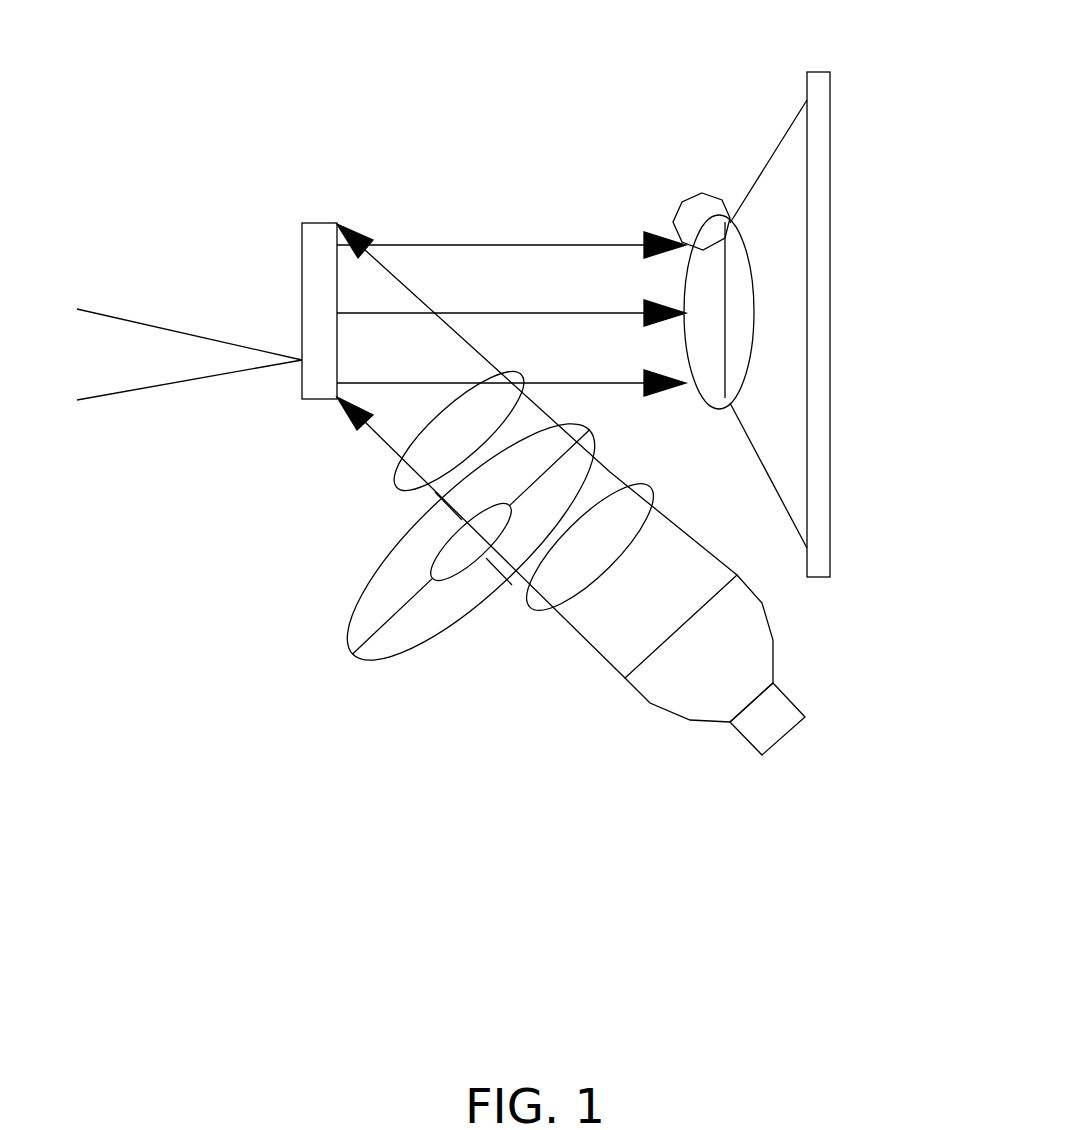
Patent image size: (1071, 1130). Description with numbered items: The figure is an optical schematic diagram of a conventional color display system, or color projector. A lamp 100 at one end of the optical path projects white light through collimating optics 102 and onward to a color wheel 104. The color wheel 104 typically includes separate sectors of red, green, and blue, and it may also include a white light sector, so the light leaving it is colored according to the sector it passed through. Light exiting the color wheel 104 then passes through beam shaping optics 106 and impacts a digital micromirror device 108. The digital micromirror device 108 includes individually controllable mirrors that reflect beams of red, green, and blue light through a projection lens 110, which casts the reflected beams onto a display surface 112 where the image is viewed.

The lamp 100 is at (773, 653).
The collimating optics 102 is at (535, 615).
The color wheel 104 is at (350, 620).
The beam shaping optics 106 is at (395, 483).
The digital micromirror device 108 is at (312, 222).
The projection lens 110 is at (695, 193).
The display surface 112 is at (830, 72).